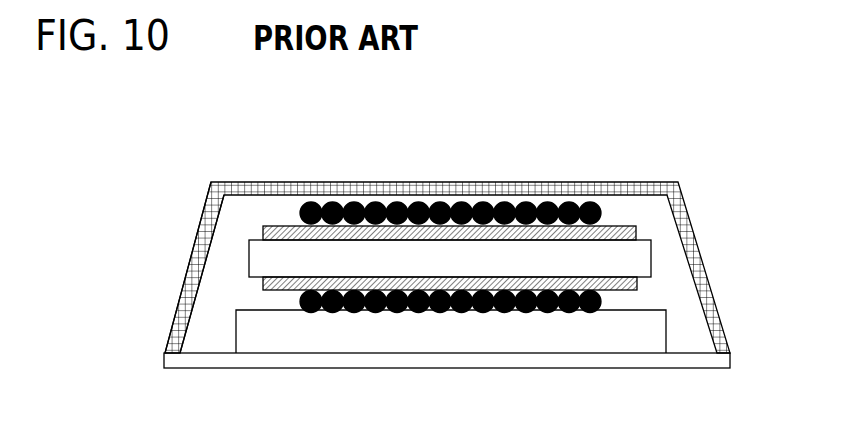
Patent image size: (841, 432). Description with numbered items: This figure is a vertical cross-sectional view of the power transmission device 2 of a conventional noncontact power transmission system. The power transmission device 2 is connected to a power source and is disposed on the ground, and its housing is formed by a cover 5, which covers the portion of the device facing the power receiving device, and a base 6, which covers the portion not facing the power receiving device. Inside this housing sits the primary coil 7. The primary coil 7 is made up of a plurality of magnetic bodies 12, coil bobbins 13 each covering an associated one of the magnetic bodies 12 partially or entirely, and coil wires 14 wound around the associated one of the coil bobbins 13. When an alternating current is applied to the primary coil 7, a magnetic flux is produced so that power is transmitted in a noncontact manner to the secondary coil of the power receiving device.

The power transmission device 2 is at (694, 181).
The cover 5 is at (211, 197).
The base 6 is at (300, 339).
The primary coil 7 is at (438, 205).
The magnetic bodies 12 is at (263, 262).
The coil bobbins 13 is at (298, 232).
The coil wires 14 is at (450, 227).